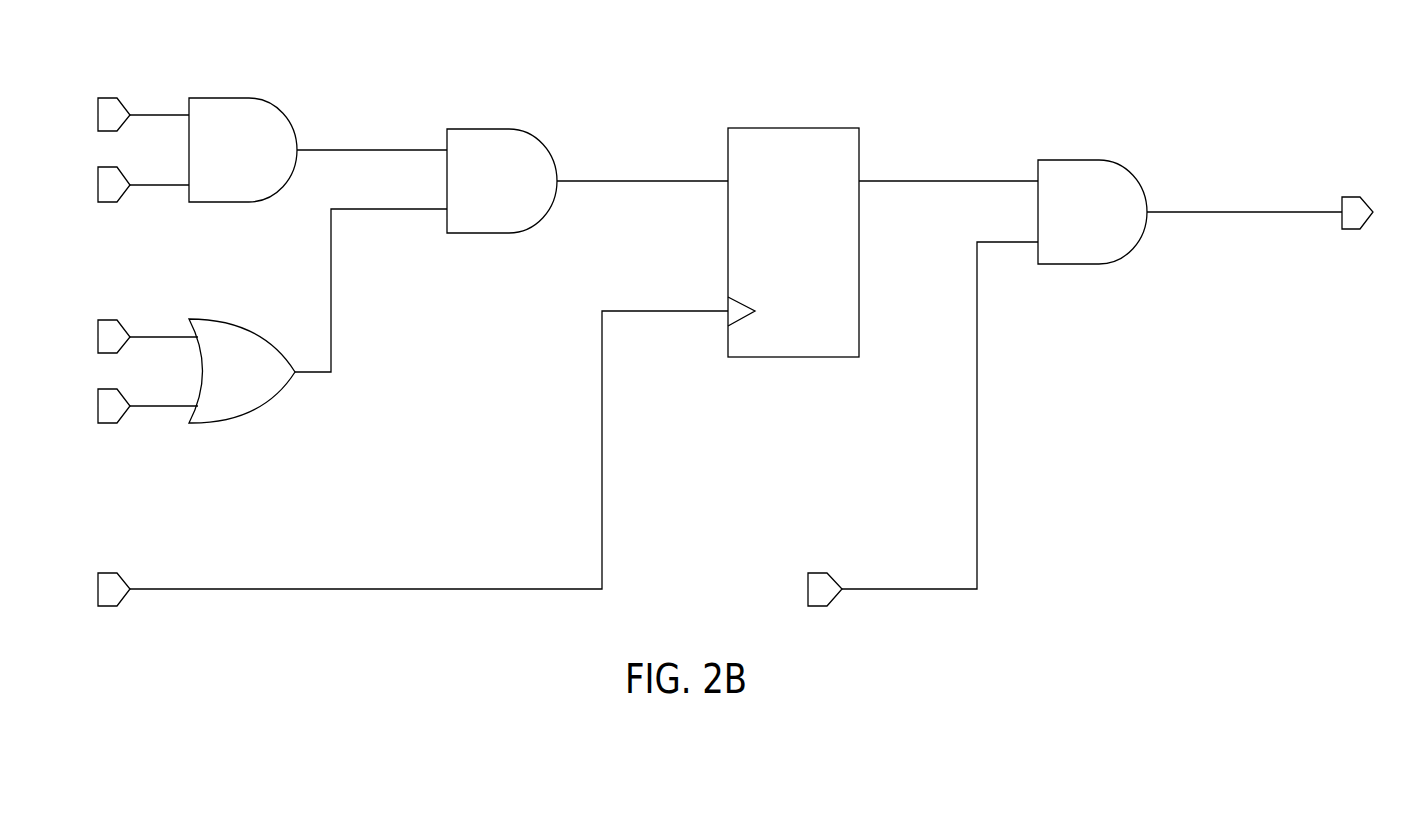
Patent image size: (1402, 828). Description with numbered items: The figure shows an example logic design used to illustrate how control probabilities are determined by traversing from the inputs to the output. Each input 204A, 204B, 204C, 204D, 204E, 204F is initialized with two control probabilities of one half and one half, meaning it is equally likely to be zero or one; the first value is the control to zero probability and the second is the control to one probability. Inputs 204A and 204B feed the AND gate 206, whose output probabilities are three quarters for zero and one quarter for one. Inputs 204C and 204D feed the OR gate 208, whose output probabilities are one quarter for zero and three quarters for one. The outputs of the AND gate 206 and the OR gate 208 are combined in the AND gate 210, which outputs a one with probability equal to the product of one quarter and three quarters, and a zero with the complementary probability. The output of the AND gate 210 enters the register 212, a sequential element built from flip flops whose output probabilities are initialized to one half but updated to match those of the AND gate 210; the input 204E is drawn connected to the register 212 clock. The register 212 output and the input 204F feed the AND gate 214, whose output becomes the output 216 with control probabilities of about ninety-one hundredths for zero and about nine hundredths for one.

The input 204A is at (118, 97).
The input 204B is at (118, 203).
The input 204C is at (118, 319).
The input 204D is at (118, 424).
The input 204E is at (118, 572).
The input 204F is at (828, 572).
The AND gate 206 is at (283, 108).
The OR gate 208 is at (252, 331).
The AND gate 210 is at (538, 130).
The register 212 is at (814, 127).
The AND gate 214 is at (1128, 170).
The output 216 is at (1362, 197).